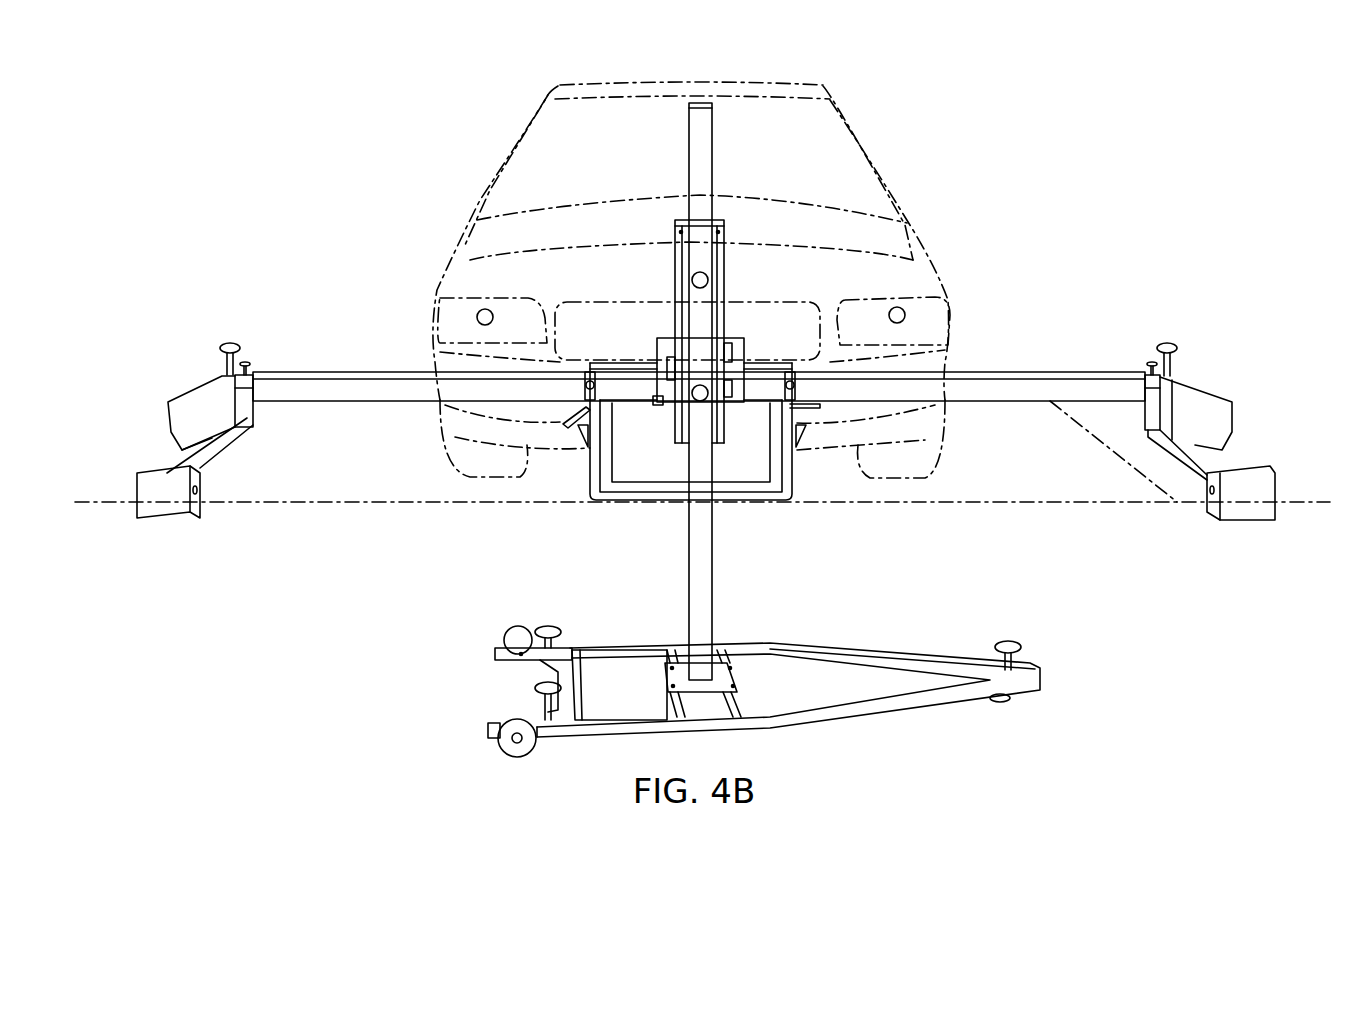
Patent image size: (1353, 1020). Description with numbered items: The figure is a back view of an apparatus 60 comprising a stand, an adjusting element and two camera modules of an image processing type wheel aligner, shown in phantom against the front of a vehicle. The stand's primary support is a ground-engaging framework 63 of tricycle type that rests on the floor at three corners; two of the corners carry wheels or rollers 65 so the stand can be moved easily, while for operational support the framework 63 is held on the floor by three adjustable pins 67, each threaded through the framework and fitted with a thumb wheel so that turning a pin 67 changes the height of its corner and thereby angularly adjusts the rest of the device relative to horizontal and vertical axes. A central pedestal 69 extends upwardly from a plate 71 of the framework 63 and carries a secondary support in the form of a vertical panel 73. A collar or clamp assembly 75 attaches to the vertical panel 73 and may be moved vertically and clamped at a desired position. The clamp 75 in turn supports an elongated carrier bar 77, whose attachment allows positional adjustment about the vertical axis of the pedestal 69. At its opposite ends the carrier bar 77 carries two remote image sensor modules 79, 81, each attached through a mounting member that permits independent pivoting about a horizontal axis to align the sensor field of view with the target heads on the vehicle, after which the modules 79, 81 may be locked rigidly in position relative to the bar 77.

The apparatus 60 is at (445, 116).
The ground-engaging framework 63 is at (858, 652).
The wheels or rollers 65 is at (512, 625).
The adjustable pins 67 is at (551, 625).
The central pedestal 69 is at (712, 566).
The plate 71 is at (730, 675).
The vertical panel 73 is at (725, 253).
The collar or clamp assembly 75 is at (740, 402).
The elongated carrier bar 77 is at (363, 402).
The remote image sensor module 79 is at (1203, 397).
The remote image sensor module 81 is at (190, 400).